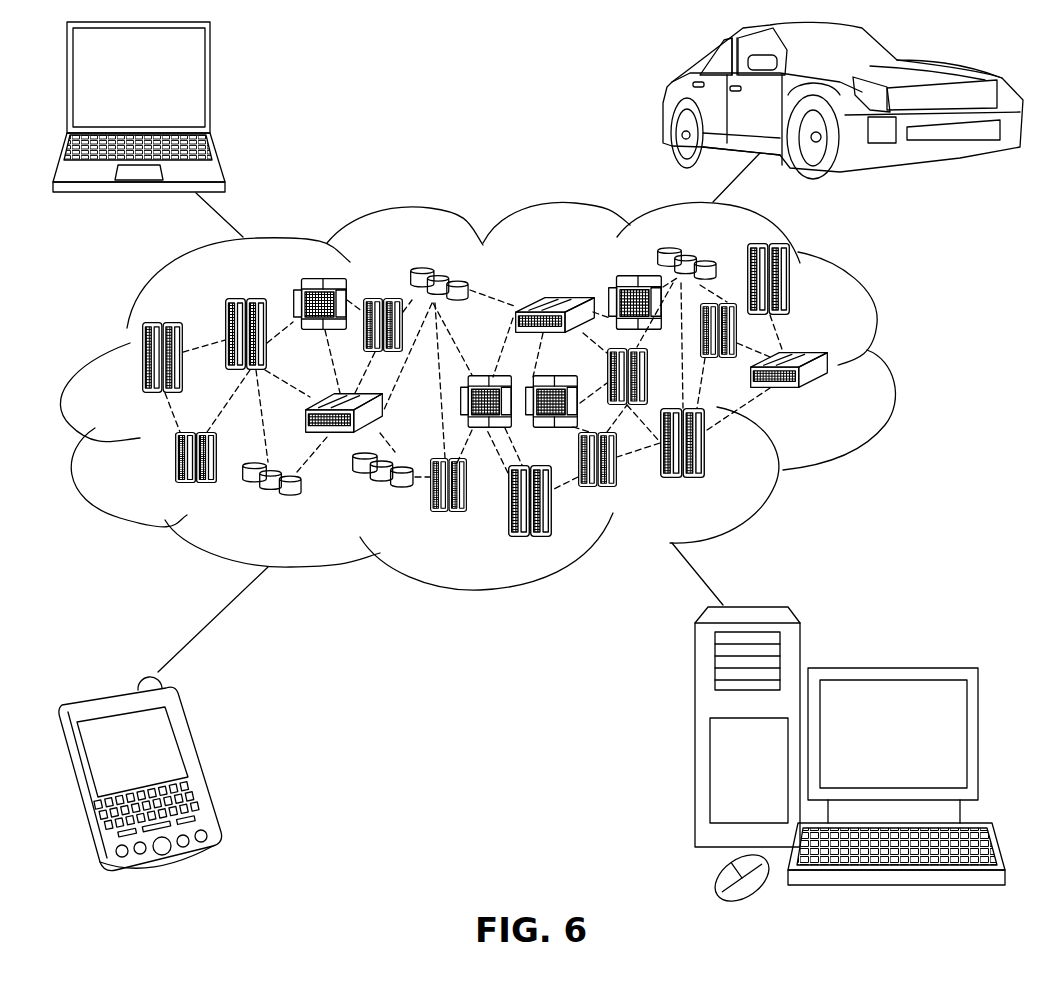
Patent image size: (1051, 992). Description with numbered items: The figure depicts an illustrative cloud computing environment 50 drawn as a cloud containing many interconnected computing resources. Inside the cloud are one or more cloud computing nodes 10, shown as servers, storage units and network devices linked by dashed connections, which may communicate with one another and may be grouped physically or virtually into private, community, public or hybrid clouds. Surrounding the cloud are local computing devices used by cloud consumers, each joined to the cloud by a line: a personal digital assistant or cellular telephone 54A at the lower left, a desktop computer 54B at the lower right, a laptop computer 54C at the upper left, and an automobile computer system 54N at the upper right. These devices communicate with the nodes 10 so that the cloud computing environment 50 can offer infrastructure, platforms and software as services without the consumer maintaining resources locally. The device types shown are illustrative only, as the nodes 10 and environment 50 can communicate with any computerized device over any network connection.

The cloud computing node 10 is at (840, 400).
The cloud computing environment 50 is at (509, 396).
The personal digital assistant or cellular telephone 54A is at (203, 766).
The desktop computer 54B is at (890, 668).
The laptop computer 54C is at (212, 86).
The automobile computer system 54N is at (666, 102).